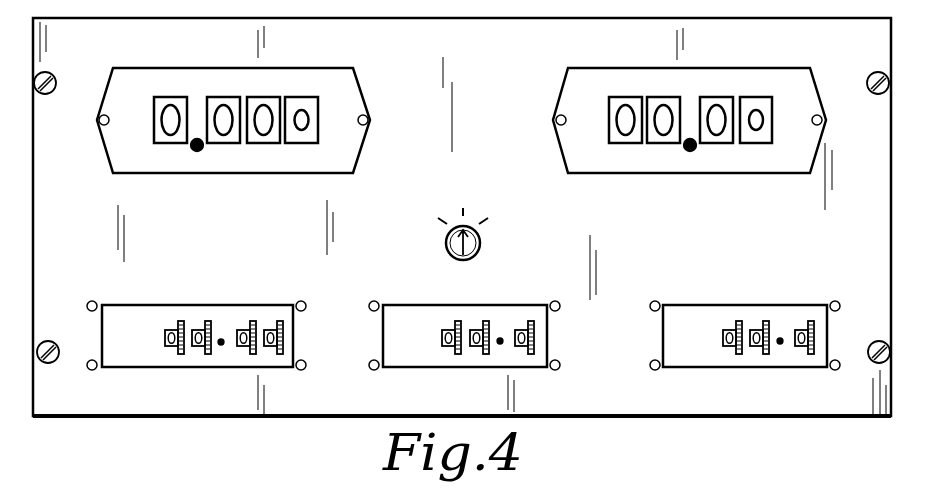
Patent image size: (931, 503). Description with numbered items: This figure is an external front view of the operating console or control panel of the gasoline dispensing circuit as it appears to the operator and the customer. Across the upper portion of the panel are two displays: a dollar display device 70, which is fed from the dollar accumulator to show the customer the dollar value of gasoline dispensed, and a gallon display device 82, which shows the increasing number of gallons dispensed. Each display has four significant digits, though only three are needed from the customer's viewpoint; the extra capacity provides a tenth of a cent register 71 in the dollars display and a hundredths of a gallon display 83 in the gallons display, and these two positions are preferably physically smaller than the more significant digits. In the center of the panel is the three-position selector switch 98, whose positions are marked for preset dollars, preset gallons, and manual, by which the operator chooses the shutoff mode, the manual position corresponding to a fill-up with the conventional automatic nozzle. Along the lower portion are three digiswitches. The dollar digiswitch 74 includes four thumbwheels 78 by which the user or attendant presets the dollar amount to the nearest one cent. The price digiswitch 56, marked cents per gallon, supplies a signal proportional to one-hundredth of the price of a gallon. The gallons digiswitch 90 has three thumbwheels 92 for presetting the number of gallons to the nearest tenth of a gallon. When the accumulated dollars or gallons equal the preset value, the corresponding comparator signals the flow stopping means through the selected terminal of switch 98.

The dollar display device 70 is at (298, 68).
The tenth of a cent register 71 is at (312, 106).
The gallon display device 82 is at (734, 68).
The hundredths of a gallon display 83 is at (770, 103).
The three-position selector switch 98 is at (481, 247).
The dollar digiswitch 74 is at (196, 340).
The thumbwheels 78 is at (280, 320).
The price digiswitch 56 is at (474, 368).
The gallons digiswitch 90 is at (745, 339).
The thumbwheels 92 is at (812, 320).